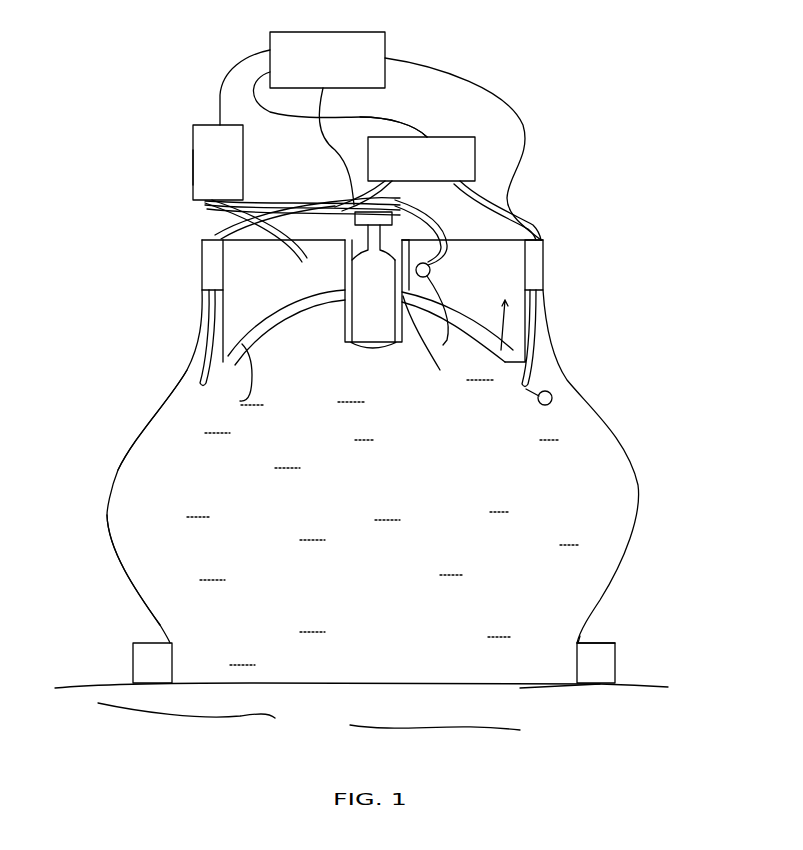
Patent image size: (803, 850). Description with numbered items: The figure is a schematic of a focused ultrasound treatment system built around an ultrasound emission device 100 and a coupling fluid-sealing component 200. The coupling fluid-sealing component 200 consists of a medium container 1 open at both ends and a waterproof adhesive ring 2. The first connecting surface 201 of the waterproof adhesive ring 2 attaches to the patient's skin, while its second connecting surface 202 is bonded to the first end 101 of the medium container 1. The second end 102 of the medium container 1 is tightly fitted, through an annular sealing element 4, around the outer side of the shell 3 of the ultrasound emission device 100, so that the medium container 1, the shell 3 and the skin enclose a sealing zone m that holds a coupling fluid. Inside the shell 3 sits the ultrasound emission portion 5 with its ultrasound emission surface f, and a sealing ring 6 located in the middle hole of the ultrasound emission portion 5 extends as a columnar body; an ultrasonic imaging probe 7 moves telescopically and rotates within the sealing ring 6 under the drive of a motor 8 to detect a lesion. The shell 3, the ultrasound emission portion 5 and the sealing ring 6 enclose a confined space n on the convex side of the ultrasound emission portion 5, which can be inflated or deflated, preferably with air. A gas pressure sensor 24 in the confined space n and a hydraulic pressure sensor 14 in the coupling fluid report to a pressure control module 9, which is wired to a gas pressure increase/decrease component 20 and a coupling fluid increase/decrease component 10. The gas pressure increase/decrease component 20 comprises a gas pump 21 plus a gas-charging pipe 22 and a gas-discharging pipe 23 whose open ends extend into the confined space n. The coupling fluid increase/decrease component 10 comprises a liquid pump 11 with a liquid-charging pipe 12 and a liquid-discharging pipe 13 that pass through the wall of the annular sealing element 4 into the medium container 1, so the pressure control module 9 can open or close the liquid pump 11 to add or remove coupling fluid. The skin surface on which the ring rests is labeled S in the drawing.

The medium container 1 is at (612, 427).
The waterproof adhesive ring 2 is at (600, 673).
The shell 3 is at (463, 240).
The annular sealing element 4 is at (211, 259).
The ultrasound emission portion 5 is at (287, 310).
The sealing ring 6 is at (426, 338).
The ultrasonic imaging probe 7 is at (368, 333).
The motor 8 is at (354, 222).
The pressure control module 9 is at (283, 48).
The coupling fluid increase/decrease component 10 is at (452, 133).
The liquid pump 11 is at (455, 168).
The liquid-charging pipe 12 is at (397, 192).
The liquid-discharging pipe 13 is at (480, 198).
The hydraulic pressure sensor 14 is at (539, 402).
The gas pressure increase/decrease component 20 is at (194, 130).
The gas pump 21 is at (200, 165).
The gas-charging pipe 22 is at (222, 204).
The gas-discharging pipe 23 is at (260, 205).
The gas pressure sensor 24 is at (433, 278).
The ultrasound emission device 100 is at (495, 270).
The first end 101 is at (583, 642).
The second end 102 is at (545, 290).
The coupling fluid-sealing component 200 is at (120, 450).
The first connecting surface 201 is at (595, 687).
The second connecting surface 202 is at (605, 642).
The sealing zone m is at (160, 570).
The confined space n is at (516, 338).
The ultrasound emission surface f is at (240, 376).
The ground surface S is at (517, 683).